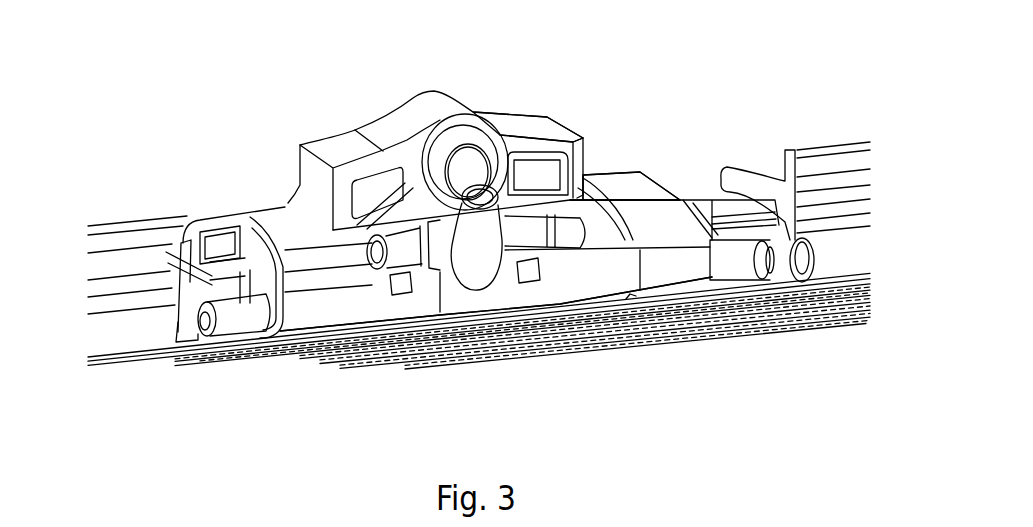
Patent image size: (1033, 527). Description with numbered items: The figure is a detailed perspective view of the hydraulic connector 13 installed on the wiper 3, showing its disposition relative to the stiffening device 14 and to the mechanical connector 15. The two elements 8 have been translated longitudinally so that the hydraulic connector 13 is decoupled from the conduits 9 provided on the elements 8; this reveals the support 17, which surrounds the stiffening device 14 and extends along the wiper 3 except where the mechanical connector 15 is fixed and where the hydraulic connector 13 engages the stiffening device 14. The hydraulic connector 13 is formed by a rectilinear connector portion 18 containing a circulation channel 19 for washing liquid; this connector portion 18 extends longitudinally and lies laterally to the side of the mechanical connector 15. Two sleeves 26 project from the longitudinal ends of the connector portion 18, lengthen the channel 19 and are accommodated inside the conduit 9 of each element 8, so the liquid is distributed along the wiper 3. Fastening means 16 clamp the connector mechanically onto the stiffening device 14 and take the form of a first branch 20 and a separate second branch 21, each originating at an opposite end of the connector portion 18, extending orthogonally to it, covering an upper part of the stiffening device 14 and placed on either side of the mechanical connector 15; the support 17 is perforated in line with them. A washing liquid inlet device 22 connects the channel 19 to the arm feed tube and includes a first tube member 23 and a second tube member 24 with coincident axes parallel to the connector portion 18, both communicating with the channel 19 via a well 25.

The wiper 3 is at (664, 414).
The element 8 is at (78, 264).
The conduit 9 is at (139, 342).
The hydraulic connector 13 is at (568, 306).
The stiffening device 14 is at (185, 238).
The mechanical connector 15 is at (538, 123).
The fastening means 16 is at (194, 202).
The support 17 is at (194, 323).
The connector portion 18 is at (333, 318).
The circulation channel 19 is at (180, 334).
The first branch 20 is at (250, 237).
The second branch 21 is at (620, 180).
The windshield washing liquid inlet device 22 is at (477, 170).
The first tube member 23 is at (437, 253).
The second tube member 24 is at (523, 240).
The well 25 is at (477, 280).
The sleeve 26 is at (248, 317).